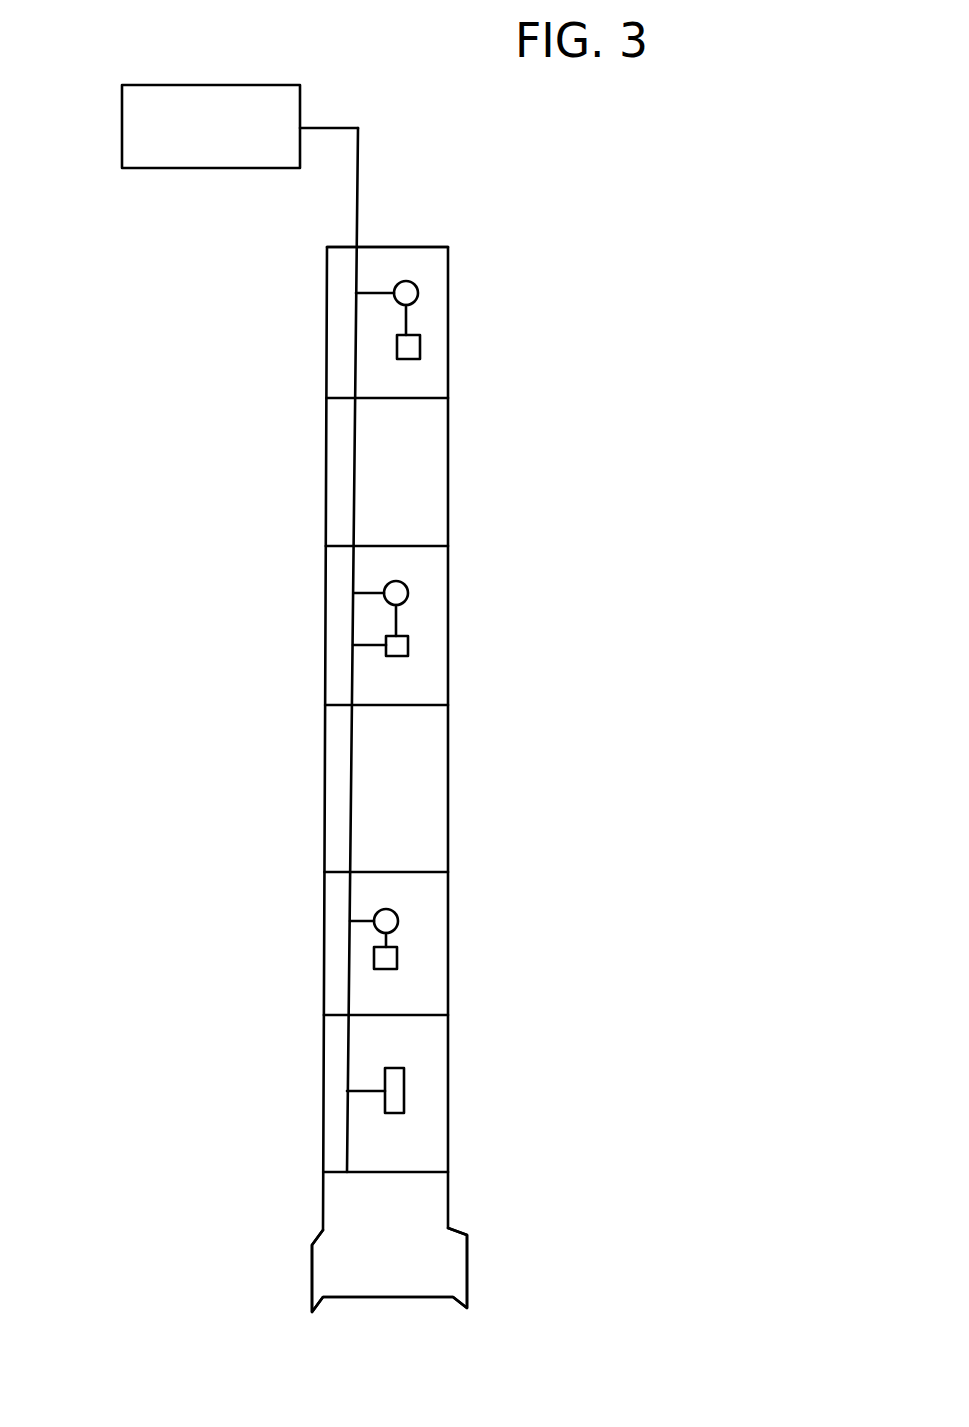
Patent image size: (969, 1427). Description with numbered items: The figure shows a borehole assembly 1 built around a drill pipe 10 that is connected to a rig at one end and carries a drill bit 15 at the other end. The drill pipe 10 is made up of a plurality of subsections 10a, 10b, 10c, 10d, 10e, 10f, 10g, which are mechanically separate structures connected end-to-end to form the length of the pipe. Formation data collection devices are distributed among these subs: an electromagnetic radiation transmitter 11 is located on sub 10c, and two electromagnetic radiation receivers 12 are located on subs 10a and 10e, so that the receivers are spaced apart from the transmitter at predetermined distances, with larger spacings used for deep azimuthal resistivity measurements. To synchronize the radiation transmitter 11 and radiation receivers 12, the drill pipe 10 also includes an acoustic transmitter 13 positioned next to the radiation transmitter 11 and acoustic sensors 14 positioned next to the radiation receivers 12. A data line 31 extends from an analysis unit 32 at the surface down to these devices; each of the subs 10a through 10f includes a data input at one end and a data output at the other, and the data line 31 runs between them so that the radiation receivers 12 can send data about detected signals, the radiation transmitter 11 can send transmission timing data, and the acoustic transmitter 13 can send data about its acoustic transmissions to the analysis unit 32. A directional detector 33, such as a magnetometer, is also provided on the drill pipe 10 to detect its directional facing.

The borehole assembly 1 is at (123, 706).
The drill pipe 10 is at (484, 779).
The subsection (sub) 10a is at (327, 247).
The subsection (sub) 10b is at (326, 398).
The subsection (sub) 10c is at (326, 546).
The subsection (sub) 10d is at (324, 872).
The subsection (sub) 10e is at (324, 1015).
The subsection (sub) 10f is at (324, 1015).
The subsection (sub) 10g is at (323, 1172).
The radiation transmitter 11 is at (410, 590).
The radiation receiver 12 is at (424, 290).
The acoustic transmitter 13 is at (403, 647).
The acoustic sensor 14 is at (418, 348).
The drill bit 15 is at (445, 1265).
The data line 31 is at (355, 446).
The analysis unit 32 is at (262, 85).
The directional detector 33 is at (398, 1081).